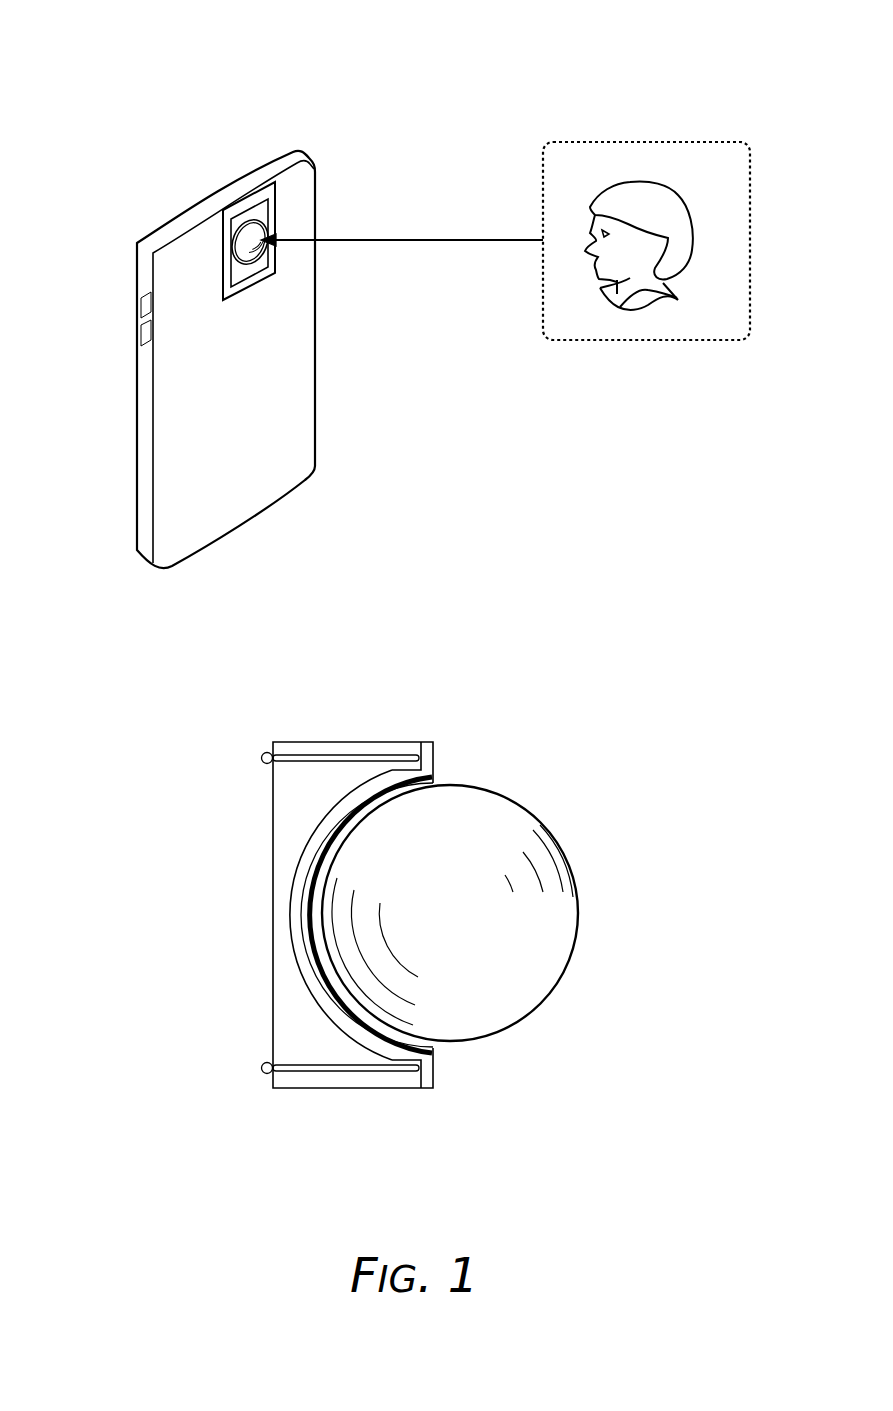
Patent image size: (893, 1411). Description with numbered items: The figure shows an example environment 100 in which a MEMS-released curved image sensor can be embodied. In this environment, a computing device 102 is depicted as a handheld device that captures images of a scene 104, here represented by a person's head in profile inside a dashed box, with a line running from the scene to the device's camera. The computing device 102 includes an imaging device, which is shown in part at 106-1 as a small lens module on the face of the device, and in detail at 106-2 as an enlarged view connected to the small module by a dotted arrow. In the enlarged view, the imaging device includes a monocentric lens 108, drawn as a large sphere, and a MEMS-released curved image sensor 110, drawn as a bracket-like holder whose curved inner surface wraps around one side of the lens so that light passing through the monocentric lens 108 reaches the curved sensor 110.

The example environment 100 is at (127, 45).
The computing device 102 is at (293, 152).
The scene 104 is at (731, 140).
The imaging device shown in part 106-1 is at (223, 230).
The imaging device shown in detail 106-2 is at (268, 257).
The monocentric lens 108 is at (542, 978).
The MEMS-released curved image sensor 110 is at (430, 1082).